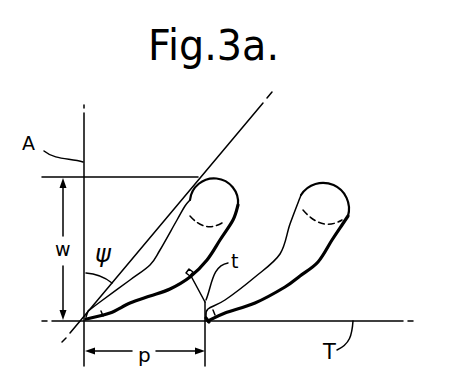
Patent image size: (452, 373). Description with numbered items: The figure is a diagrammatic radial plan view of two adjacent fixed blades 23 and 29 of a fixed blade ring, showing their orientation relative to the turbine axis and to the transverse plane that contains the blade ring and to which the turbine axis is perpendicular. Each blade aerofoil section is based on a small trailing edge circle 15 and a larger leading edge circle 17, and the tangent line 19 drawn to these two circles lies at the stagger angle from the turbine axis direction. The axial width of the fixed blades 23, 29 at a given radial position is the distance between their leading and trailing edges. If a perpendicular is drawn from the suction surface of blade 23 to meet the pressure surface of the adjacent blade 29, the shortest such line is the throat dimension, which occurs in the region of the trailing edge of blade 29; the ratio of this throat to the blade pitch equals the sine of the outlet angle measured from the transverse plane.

The trailing edge circle 15 is at (210, 323).
The leading edge circle 17 is at (337, 207).
The tangent line 19 is at (241, 121).
The fixed blade 23 is at (244, 177).
The fixed blade 29 is at (372, 177).